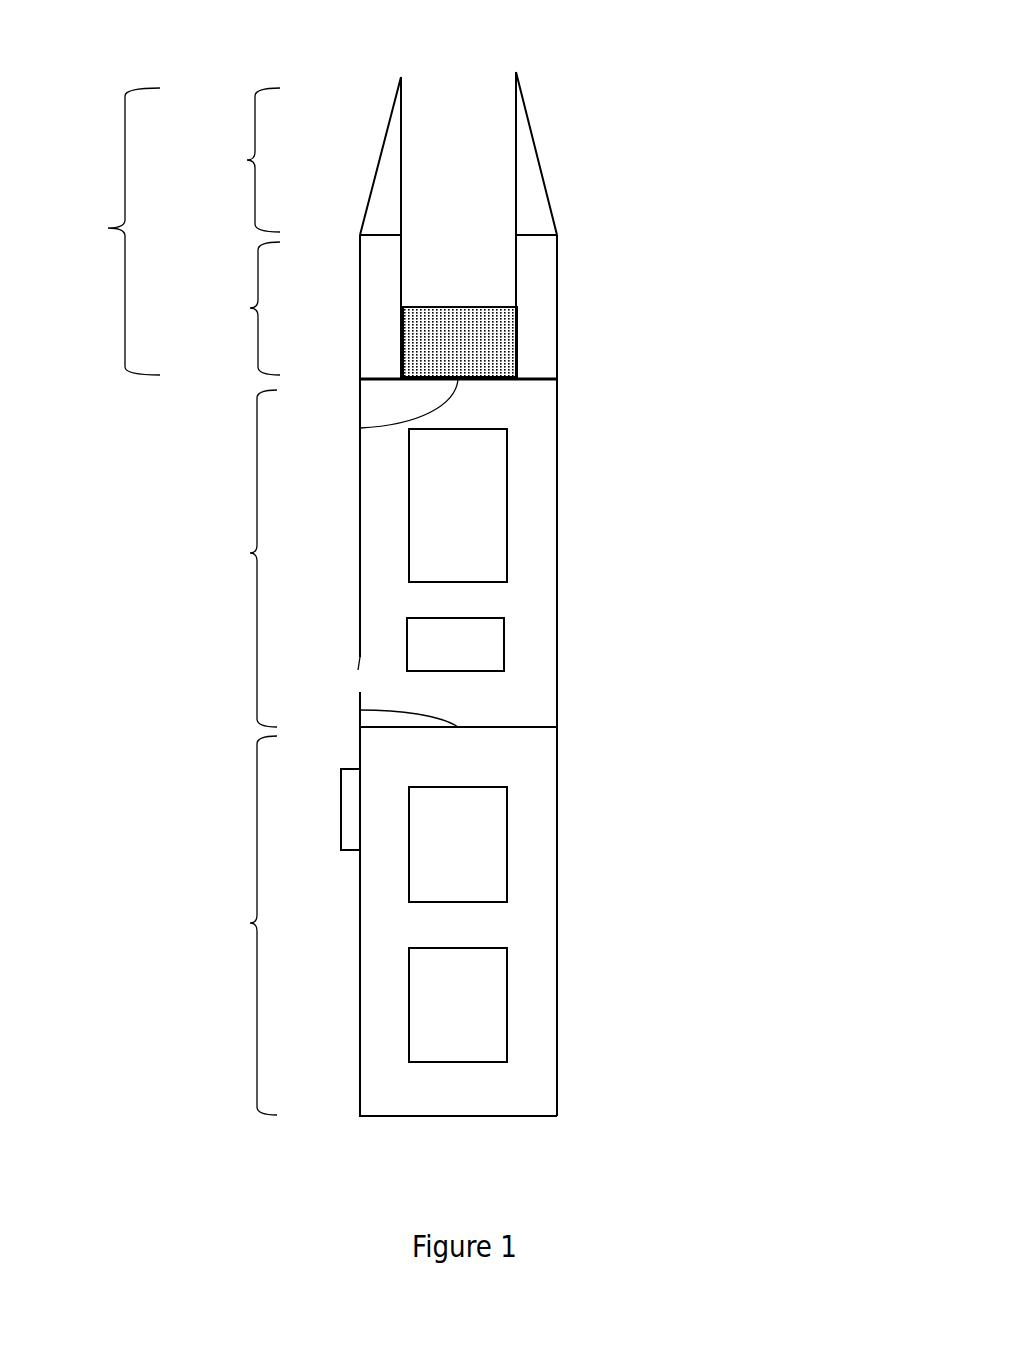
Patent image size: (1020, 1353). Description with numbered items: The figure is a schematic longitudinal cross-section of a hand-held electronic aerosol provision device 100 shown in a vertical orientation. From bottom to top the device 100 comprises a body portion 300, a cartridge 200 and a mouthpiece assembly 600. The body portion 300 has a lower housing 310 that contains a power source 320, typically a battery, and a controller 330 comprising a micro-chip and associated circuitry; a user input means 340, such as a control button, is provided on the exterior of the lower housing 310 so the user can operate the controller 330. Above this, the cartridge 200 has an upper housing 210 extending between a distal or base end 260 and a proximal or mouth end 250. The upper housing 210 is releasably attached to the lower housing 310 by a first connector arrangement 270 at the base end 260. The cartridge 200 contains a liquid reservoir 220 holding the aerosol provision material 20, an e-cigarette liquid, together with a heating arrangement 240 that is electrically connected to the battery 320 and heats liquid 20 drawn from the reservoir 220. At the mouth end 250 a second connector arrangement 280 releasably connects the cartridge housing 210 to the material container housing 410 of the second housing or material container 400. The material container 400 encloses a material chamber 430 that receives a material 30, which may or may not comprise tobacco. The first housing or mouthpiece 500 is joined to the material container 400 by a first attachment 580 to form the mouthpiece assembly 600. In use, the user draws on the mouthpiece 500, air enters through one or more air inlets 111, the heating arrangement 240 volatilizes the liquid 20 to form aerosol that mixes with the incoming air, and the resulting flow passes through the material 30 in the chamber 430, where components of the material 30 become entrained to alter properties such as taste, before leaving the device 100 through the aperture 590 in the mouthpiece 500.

The aerosol provision device 100 is at (670, 576).
The mouthpiece assembly 600 is at (108, 228).
The first housing (mouthpiece) 500 is at (247, 160).
The second housing (material container) 400 is at (250, 308).
The cartridge 200 is at (250, 553).
The body portion 300 is at (250, 923).
The aperture 590 is at (462, 100).
The first attachment 580 is at (360, 233).
The material container housing 410 is at (558, 263).
The material 30 is at (508, 325).
The material chamber 430 is at (522, 363).
The proximal end (mouth end) of the upper housing 250 is at (558, 380).
The second connector arrangement 280 is at (360, 428).
The aerosol provision material 20 is at (478, 452).
The third upper housing 210 is at (557, 505).
The liquid reservoir 220 is at (537, 573).
The air inlet 111 is at (358, 670).
The heating arrangement 240 is at (480, 645).
The first connector arrangement 270 is at (360, 710).
The distal end (base end) of the upper housing 260 is at (538, 725).
The controller 330 is at (492, 825).
The user input means 340 is at (352, 830).
The power source 320 is at (492, 1003).
The fourth lower housing 310 is at (568, 1040).